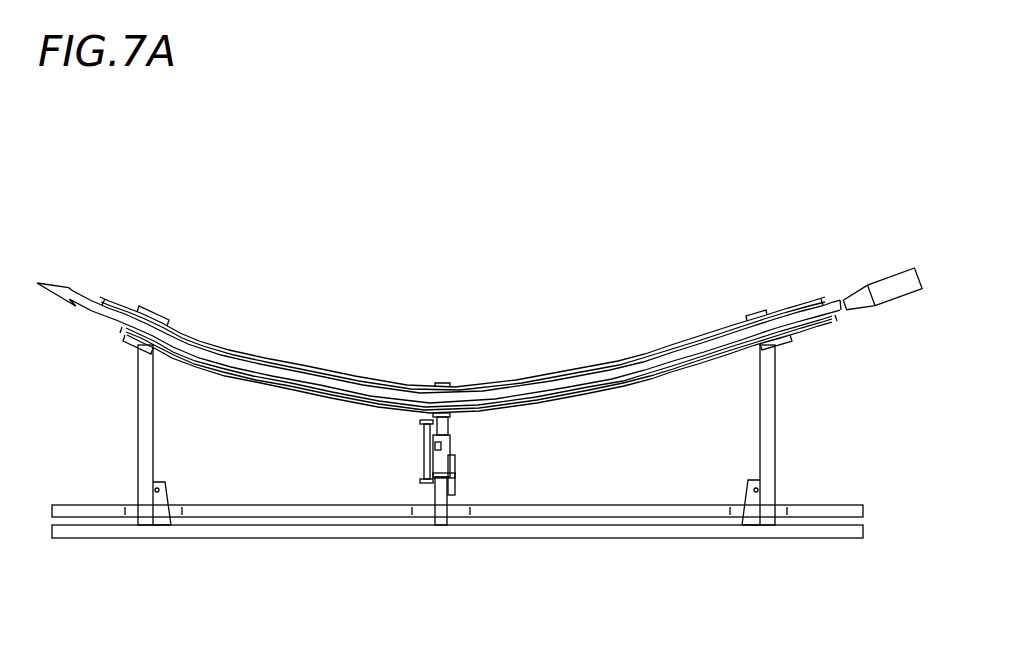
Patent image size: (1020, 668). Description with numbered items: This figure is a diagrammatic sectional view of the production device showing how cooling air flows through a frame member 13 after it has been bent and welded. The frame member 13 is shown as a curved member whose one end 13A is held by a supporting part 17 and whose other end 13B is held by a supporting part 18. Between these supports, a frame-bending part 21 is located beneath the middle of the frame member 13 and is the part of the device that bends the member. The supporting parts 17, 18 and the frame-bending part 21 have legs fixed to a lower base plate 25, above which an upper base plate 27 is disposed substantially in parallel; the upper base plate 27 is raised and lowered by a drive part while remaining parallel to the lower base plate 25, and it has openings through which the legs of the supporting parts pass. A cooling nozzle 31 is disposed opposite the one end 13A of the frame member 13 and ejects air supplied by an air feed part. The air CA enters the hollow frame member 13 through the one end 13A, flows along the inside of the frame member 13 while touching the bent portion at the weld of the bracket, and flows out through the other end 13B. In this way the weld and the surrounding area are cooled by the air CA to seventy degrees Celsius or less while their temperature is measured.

The frame member 13 is at (439, 320).
The one end of the frame member 13A is at (803, 300).
The other end of the frame member 13B is at (113, 300).
The supporting part 17 is at (763, 312).
The supporting part 18 is at (150, 310).
The air CA is at (395, 395).
The frame-bending part 21 is at (445, 446).
The lower base plate 25 is at (843, 540).
The upper base plate 27 is at (843, 506).
The cooling nozzle 31 is at (885, 278).